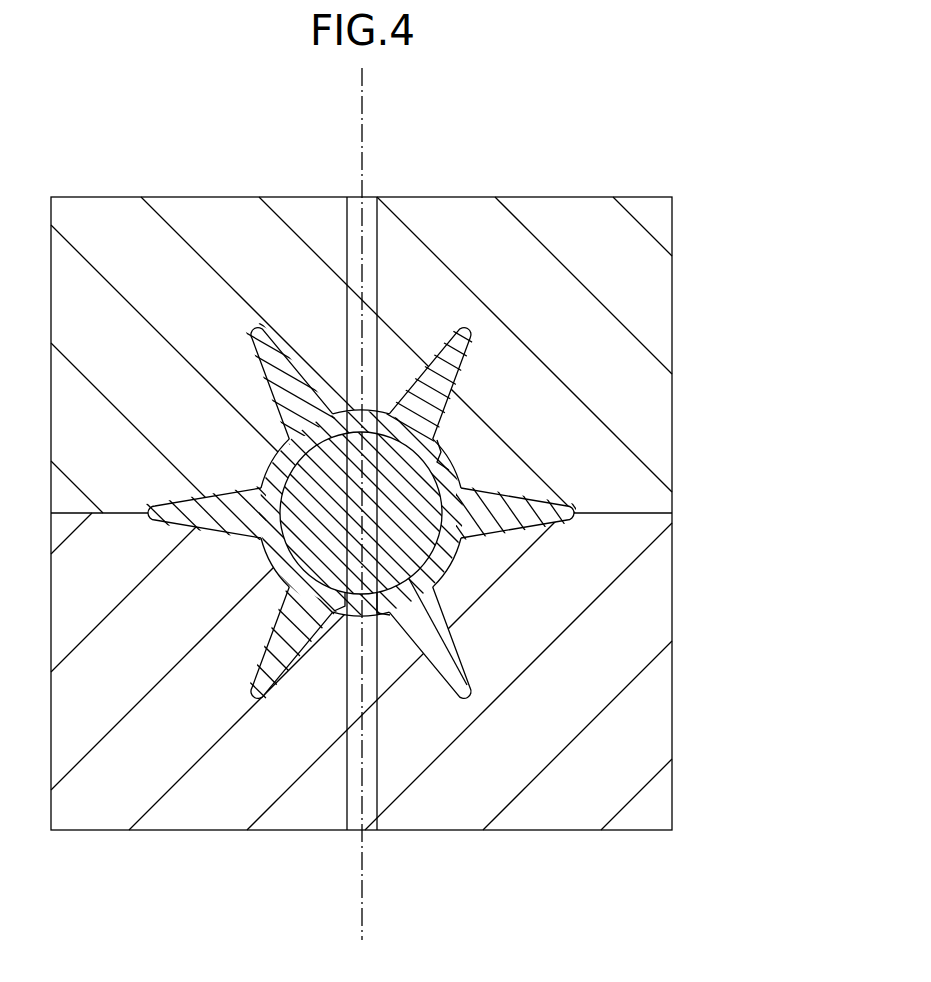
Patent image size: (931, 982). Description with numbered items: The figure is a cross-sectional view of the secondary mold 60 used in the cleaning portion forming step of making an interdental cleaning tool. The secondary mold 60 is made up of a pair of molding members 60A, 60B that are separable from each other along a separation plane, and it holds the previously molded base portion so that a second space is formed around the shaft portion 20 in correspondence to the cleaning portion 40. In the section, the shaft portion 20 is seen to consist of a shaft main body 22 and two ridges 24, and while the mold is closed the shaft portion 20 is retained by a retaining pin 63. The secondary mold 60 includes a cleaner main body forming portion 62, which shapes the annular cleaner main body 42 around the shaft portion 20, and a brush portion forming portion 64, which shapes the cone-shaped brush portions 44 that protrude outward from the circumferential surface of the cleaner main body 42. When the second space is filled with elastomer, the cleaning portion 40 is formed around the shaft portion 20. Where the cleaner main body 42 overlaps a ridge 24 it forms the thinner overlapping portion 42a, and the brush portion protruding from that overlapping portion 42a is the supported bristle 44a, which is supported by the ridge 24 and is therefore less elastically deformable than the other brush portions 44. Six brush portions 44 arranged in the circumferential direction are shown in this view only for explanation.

The shaft portion 20 is at (231, 635).
The shaft main body 22 is at (340, 608).
The ridge 24 is at (284, 541).
The cleaning portion 40 is at (569, 651).
The cleaner main body 42 is at (443, 573).
The overlapping portion 42a is at (453, 508).
The brush portion 44 is at (448, 685).
The supported bristle 44a is at (538, 524).
The secondary mold 60 is at (438, 513).
The molding member 60A is at (655, 437).
The molding member 60B is at (410, 671).
The cleaner main body forming portion 62 is at (438, 446).
The retaining pin 63 is at (355, 197).
The brush portion forming portion 64 is at (464, 326).